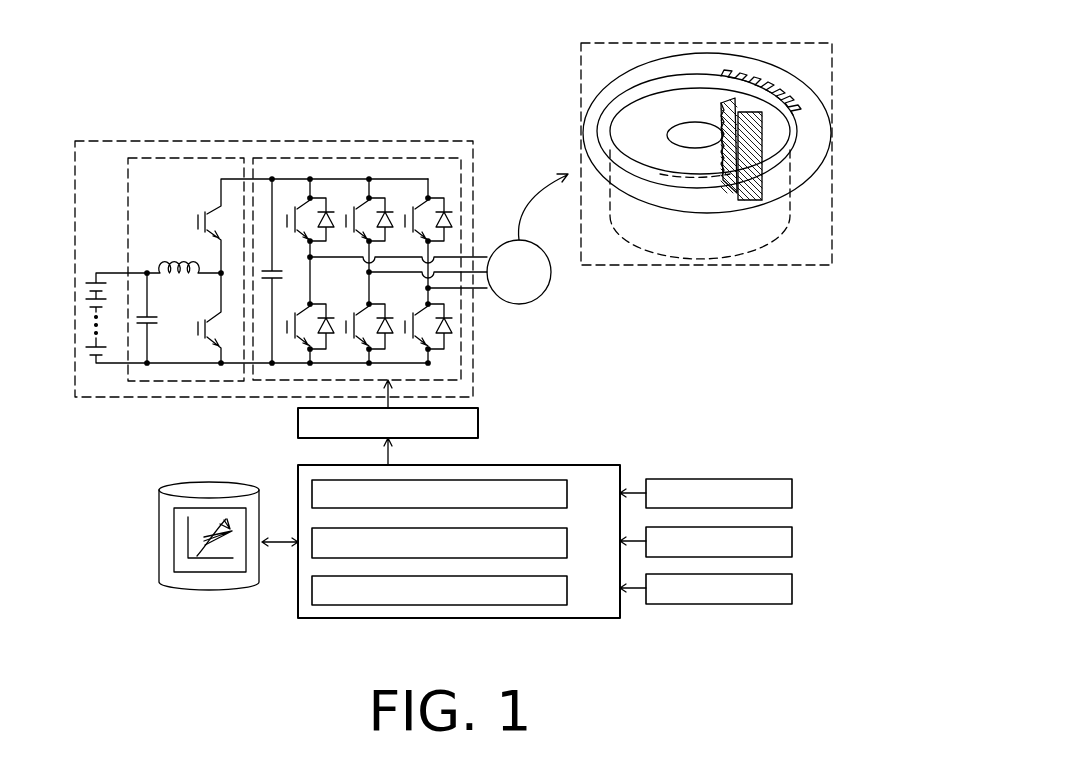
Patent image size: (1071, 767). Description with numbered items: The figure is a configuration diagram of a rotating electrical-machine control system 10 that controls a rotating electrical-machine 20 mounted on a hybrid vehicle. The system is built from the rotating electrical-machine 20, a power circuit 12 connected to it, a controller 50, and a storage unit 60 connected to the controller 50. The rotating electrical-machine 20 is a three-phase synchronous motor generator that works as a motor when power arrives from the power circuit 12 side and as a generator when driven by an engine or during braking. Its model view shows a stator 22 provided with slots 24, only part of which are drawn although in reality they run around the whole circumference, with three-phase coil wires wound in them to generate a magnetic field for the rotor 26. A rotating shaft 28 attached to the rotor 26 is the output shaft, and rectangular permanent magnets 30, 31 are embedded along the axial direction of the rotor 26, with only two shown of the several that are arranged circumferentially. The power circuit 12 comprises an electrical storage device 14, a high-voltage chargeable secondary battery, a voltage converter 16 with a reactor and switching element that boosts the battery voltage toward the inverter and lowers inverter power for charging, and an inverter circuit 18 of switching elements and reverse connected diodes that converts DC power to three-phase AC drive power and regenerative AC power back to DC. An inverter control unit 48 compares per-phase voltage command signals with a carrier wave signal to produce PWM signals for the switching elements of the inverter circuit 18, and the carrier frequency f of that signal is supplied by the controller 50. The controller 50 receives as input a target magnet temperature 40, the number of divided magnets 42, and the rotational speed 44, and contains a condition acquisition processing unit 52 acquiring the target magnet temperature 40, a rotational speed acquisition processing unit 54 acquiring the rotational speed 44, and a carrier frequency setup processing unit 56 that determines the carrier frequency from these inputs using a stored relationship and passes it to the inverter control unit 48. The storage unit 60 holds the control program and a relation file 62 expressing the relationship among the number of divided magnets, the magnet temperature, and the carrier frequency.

The rotating electrical-machine control system 10 is at (137, 612).
The power circuit 12 is at (145, 141).
The electrical storage device 14 is at (92, 278).
The voltage converter 16 is at (215, 158).
The inverter circuit 18 is at (357, 157).
The rotating electrical-machine 20 is at (519, 305).
The stator 22 is at (803, 168).
The slots 24 is at (770, 83).
The rotor 26 is at (680, 162).
The rotating shaft 28 is at (680, 135).
The permanent magnet 30 is at (733, 182).
The permanent magnet 31 is at (747, 200).
The target magnet temperature 40 is at (793, 493).
The number of divided magnets 42 is at (793, 541).
The rotational speed 44 is at (793, 588).
The inverter control unit 48 is at (480, 422).
The controller 50 is at (370, 619).
The condition acquisition processing unit 52 is at (568, 493).
The rotational speed acquisition processing unit 54 is at (568, 541).
The carrier frequency setup processing unit 56 is at (568, 588).
The storage unit 60 is at (208, 591).
The relation file 62 is at (174, 541).